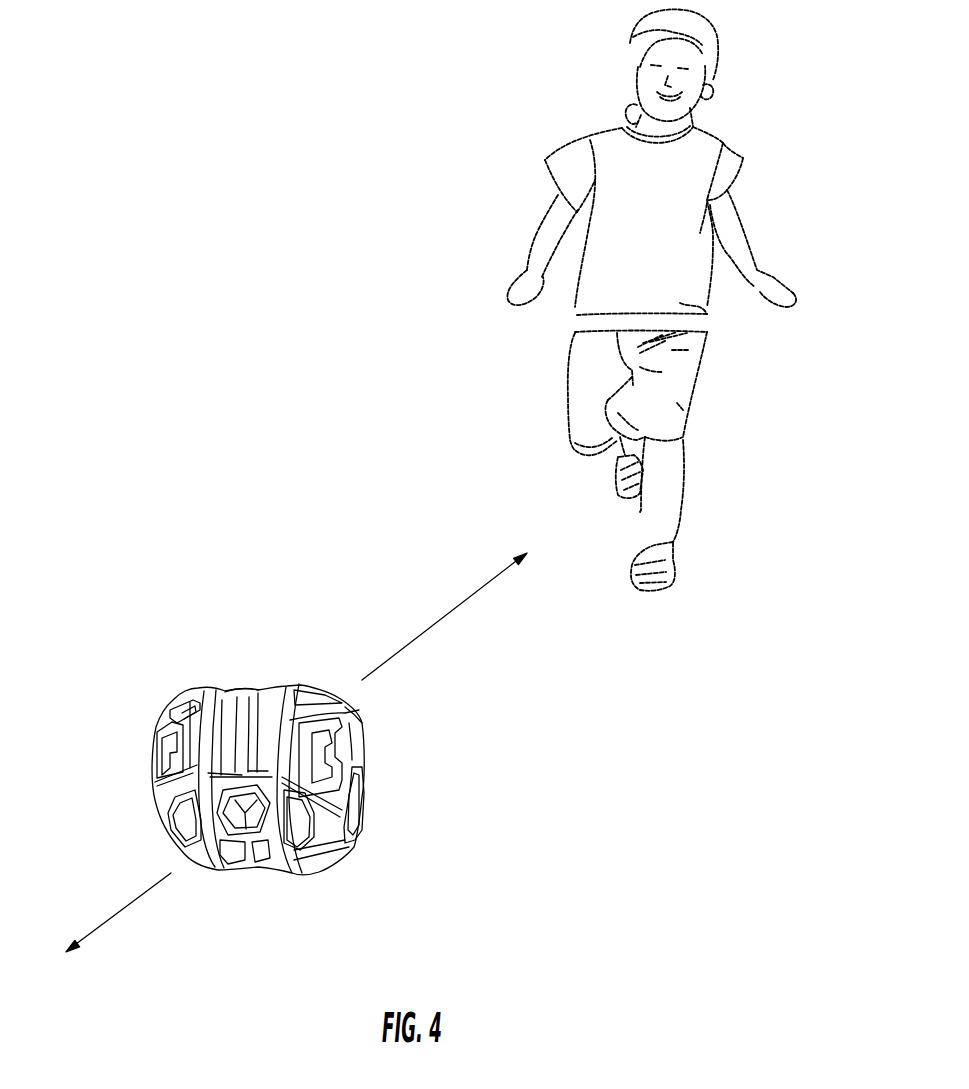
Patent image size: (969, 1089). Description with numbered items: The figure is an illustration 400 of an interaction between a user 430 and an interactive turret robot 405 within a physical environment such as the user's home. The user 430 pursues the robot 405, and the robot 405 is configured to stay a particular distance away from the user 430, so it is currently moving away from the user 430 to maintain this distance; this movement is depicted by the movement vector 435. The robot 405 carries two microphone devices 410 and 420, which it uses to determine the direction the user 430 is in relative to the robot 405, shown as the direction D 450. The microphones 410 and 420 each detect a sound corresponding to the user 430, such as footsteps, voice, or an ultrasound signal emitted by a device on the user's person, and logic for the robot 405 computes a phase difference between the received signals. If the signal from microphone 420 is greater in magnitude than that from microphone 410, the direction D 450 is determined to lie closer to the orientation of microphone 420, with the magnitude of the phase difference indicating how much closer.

The illustration 400 is at (466, 98).
The interactive turret robot 405 is at (251, 690).
The microphone device 410 is at (56, 787).
The microphone device 420 is at (362, 797).
The user 430 is at (727, 146).
The movement vector 435 is at (122, 910).
The direction D 450 is at (440, 622).